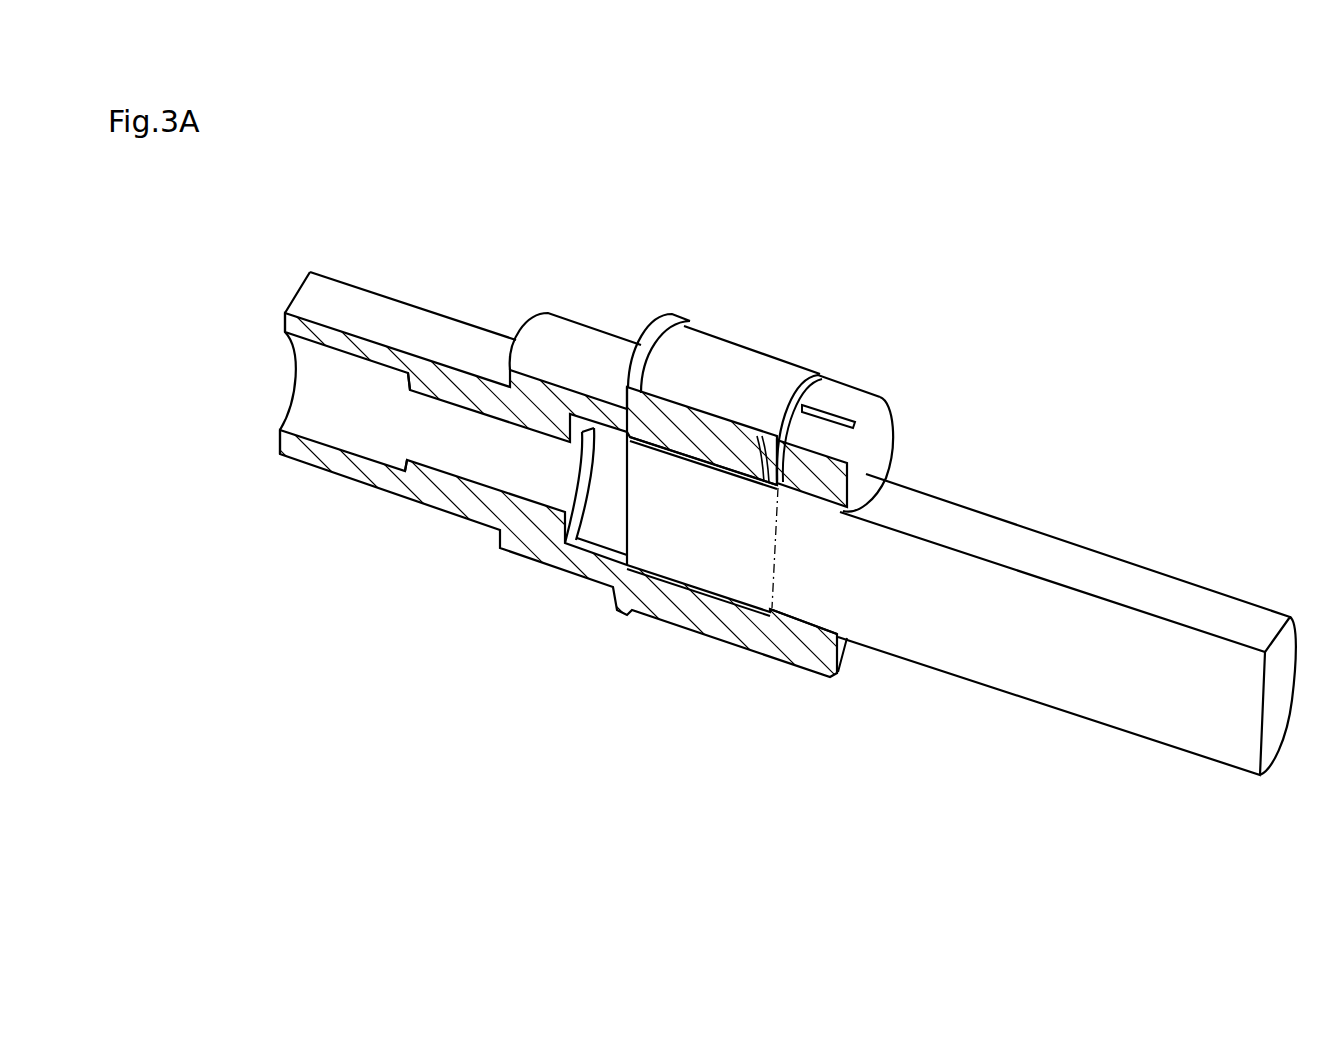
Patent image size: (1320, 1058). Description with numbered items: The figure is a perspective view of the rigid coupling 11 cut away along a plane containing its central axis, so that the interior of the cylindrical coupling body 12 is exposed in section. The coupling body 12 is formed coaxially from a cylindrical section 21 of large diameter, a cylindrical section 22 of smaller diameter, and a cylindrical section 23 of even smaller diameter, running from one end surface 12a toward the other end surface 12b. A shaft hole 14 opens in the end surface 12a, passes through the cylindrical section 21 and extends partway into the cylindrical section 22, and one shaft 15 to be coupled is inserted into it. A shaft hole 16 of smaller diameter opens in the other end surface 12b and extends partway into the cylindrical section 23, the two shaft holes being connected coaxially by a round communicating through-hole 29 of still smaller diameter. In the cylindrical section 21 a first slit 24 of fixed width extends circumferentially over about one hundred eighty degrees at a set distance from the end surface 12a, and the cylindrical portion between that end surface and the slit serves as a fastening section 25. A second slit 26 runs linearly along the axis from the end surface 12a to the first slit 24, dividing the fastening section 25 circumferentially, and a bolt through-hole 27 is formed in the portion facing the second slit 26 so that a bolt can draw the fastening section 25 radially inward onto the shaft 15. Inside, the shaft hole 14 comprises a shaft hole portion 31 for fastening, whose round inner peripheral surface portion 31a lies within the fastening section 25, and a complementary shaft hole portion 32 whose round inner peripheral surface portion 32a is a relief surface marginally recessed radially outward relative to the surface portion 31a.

The rigid coupling 11 is at (684, 278).
The coupling body 12 is at (533, 575).
The one end surface 12a is at (882, 446).
The other end surface 12b is at (290, 290).
The shaft hole 14 is at (793, 700).
The shaft 15 is at (1081, 710).
The shaft hole 16 is at (312, 390).
The cylindrical section of large diameter 21 is at (731, 324).
The cylindrical section of smaller diameter 22 is at (588, 302).
The cylindrical section of even smaller diameter 23 is at (449, 303).
The first slit 24 is at (824, 363).
The fastening section 25 is at (884, 377).
The second slit 26 is at (797, 462).
The bolt through-hole 27 is at (829, 412).
The communicating through-hole 29 is at (458, 460).
The shaft hole portion for fastening 31 is at (798, 618).
The round inner peripheral surface portion 31a is at (837, 627).
The complementary shaft hole portion 32 is at (671, 575).
The round inner peripheral surface portion 32a is at (768, 604).